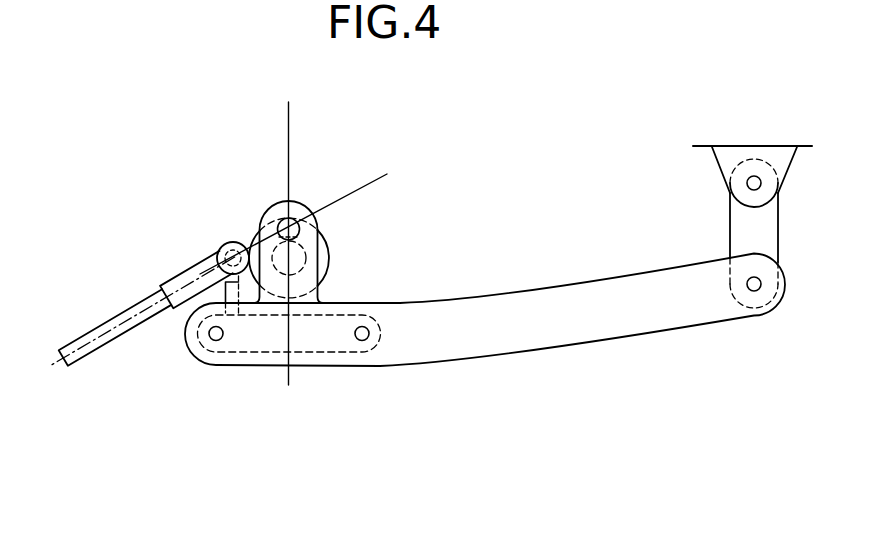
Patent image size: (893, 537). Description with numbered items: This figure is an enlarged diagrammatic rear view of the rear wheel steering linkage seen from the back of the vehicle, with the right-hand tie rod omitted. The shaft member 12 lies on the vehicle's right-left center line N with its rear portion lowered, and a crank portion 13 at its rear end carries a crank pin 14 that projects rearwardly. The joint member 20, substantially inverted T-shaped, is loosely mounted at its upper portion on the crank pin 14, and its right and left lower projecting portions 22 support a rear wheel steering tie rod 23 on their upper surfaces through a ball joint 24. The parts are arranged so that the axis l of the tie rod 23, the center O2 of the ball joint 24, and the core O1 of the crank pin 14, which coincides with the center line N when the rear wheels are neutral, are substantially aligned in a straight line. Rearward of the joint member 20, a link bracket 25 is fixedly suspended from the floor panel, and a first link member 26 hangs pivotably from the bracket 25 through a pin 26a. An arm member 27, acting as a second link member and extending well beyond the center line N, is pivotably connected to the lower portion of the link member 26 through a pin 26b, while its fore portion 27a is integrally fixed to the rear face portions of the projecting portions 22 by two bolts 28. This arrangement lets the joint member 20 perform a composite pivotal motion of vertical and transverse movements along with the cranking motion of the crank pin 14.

The shaft member 12 is at (310, 265).
The crank portion 13 is at (328, 247).
The crank pin 14 is at (328, 226).
The joint member 20 is at (322, 295).
The projecting portions 22 is at (189, 333).
The rear wheel steering tie rod 23 is at (104, 345).
The ball joint 24 is at (233, 241).
The link bracket 25 is at (730, 150).
The first link member 26 is at (742, 225).
The pin 26a is at (753, 176).
The pin 26b is at (754, 292).
The arm member 27 is at (524, 348).
The fore portion 27a is at (280, 364).
The bolts 28 is at (215, 341).
The center line N is at (291, 121).
The core of the crank pin O1 is at (295, 219).
The center of the ball joint O2 is at (221, 247).
The axis of the tie rod l is at (143, 302).